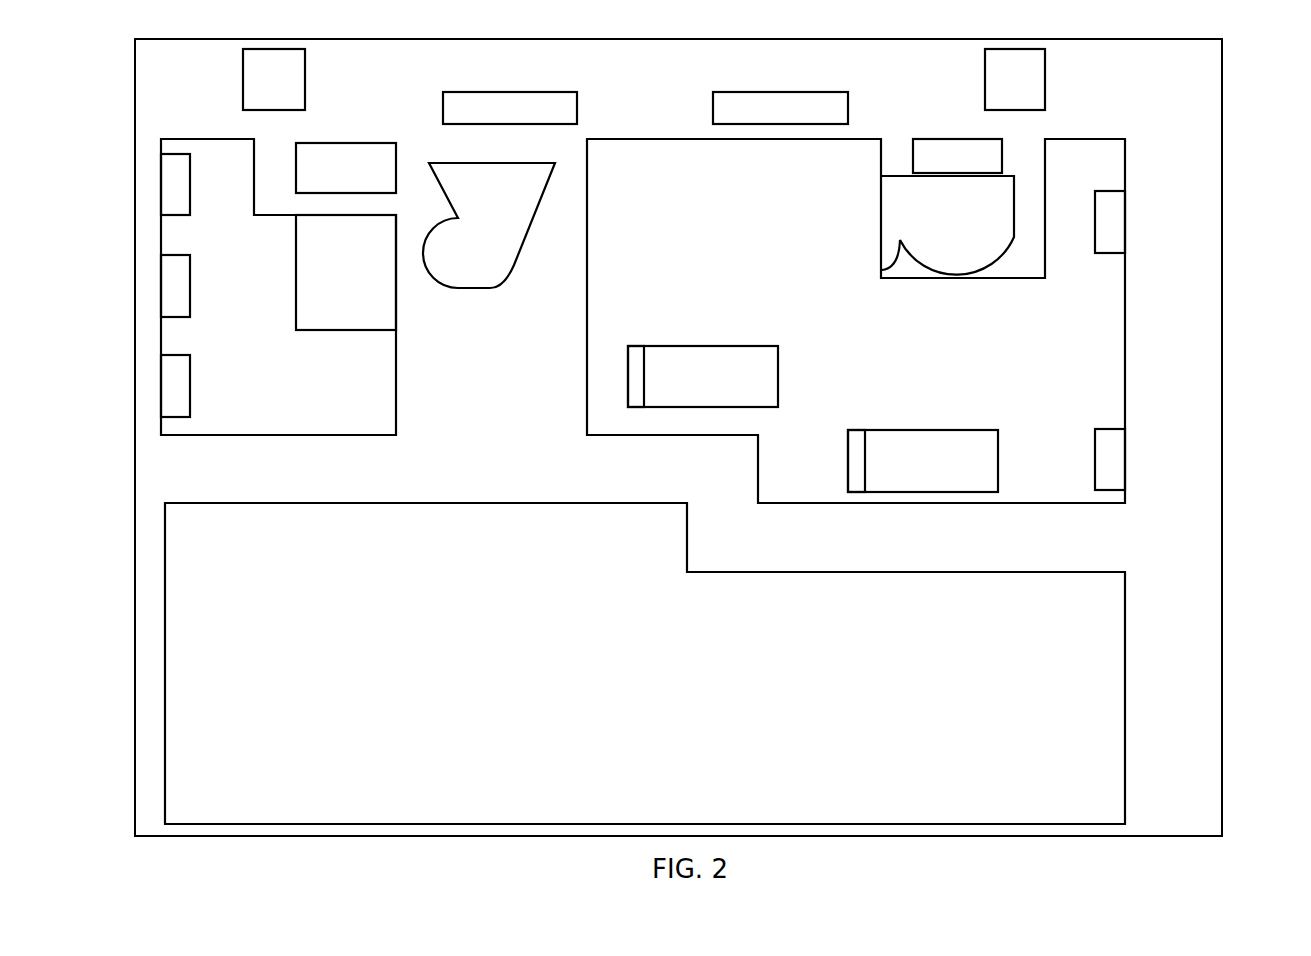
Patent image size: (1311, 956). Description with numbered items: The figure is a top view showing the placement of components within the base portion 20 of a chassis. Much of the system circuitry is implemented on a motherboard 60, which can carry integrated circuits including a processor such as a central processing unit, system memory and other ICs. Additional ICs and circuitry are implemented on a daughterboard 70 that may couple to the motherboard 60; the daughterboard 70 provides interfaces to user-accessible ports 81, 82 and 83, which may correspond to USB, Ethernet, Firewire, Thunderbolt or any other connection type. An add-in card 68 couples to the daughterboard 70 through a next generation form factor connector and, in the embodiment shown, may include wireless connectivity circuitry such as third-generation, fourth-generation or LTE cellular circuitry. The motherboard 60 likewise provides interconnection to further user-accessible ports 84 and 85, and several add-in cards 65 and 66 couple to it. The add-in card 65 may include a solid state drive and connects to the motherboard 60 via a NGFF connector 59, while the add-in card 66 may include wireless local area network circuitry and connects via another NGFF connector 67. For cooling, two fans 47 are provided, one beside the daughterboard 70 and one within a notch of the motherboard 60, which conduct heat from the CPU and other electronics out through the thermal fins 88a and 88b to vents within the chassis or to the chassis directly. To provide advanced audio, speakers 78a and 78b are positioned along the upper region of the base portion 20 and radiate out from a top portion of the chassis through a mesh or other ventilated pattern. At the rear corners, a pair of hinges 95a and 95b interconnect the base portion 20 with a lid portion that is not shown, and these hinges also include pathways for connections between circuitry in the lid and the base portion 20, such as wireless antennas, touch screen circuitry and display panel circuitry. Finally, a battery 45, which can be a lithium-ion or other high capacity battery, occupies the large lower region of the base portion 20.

The base portion 20 is at (1238, 89).
The battery 45 is at (657, 710).
The fans 47 is at (510, 243).
The NGFF connector 59 is at (640, 346).
The motherboard 60 is at (722, 280).
The add-in card 65 is at (778, 375).
The add-in card 66 is at (930, 430).
The NGFF connector 67 is at (857, 430).
The add-in card 68 is at (380, 312).
The daughterboard 70 is at (274, 421).
The speaker 78a is at (347, 143).
The speaker 78b is at (913, 147).
The port 81 is at (175, 183).
The port 82 is at (175, 285).
The port 83 is at (175, 386).
The port 84 is at (1112, 222).
The port 85 is at (1112, 460).
The thermal fin 88a is at (510, 92).
The thermal fin 88b is at (780, 92).
The hinge 95a is at (305, 82).
The hinge 95b is at (1045, 80).